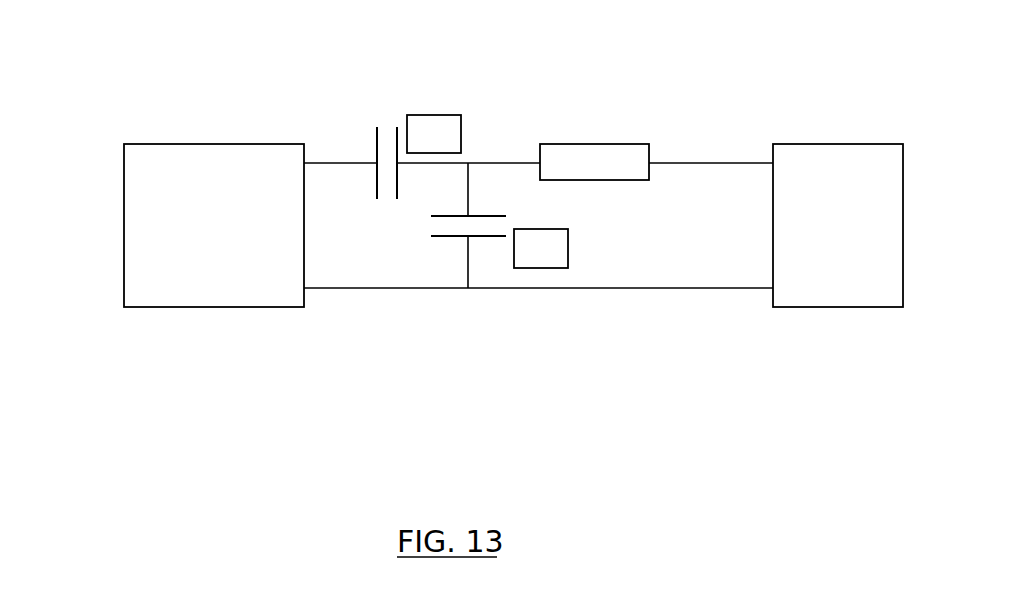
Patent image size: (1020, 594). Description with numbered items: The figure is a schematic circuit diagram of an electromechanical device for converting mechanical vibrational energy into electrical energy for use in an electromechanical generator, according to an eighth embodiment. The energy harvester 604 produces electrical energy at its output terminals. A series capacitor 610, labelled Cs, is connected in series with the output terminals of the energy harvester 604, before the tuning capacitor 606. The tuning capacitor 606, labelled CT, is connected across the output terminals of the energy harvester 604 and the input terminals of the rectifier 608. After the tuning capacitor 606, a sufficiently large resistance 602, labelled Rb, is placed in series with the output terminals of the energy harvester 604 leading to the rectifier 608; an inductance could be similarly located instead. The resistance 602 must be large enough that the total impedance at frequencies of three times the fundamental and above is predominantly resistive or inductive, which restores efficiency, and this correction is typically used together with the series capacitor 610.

The energy harvester 604 is at (137, 143).
The series capacitor 610 is at (388, 128).
The tuning capacitor 606 is at (490, 238).
The resistance 602 is at (610, 143).
The rectifier 608 is at (802, 308).